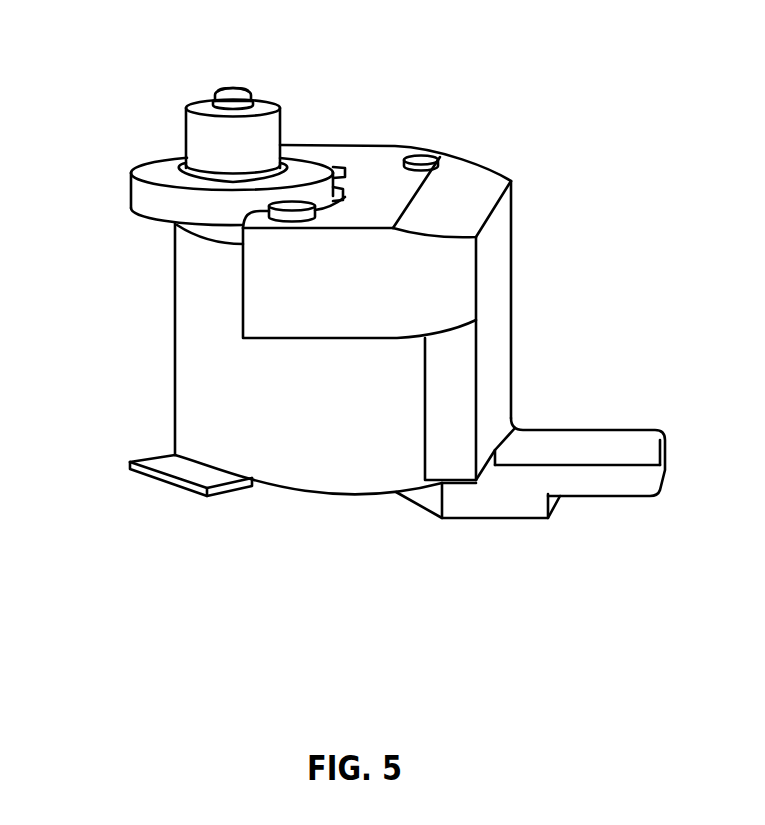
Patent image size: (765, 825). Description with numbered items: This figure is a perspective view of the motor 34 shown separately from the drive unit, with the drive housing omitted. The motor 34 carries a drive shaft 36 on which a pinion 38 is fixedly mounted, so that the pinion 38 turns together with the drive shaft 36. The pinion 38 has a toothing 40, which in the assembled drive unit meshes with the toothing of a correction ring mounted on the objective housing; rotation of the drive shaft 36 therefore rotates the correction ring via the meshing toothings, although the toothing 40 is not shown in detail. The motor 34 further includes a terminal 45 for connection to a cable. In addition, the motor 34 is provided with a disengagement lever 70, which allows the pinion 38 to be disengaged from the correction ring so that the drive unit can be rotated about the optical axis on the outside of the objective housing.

The motor 34 is at (378, 158).
The drive shaft 36 is at (231, 88).
The pinion 38 is at (157, 170).
The toothing 40 is at (132, 185).
The terminal 45 is at (153, 475).
The disengagement lever 70 is at (598, 487).